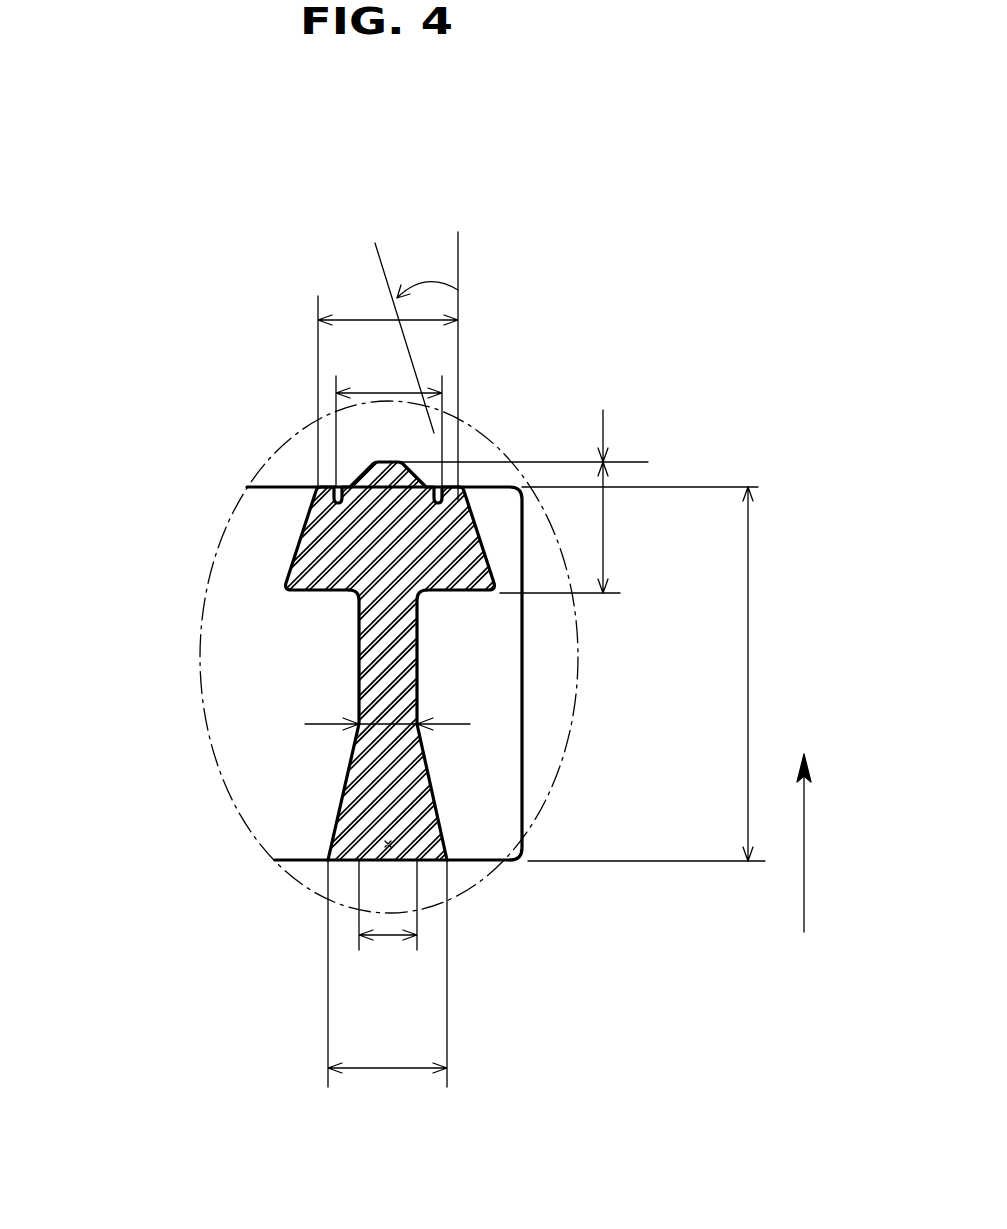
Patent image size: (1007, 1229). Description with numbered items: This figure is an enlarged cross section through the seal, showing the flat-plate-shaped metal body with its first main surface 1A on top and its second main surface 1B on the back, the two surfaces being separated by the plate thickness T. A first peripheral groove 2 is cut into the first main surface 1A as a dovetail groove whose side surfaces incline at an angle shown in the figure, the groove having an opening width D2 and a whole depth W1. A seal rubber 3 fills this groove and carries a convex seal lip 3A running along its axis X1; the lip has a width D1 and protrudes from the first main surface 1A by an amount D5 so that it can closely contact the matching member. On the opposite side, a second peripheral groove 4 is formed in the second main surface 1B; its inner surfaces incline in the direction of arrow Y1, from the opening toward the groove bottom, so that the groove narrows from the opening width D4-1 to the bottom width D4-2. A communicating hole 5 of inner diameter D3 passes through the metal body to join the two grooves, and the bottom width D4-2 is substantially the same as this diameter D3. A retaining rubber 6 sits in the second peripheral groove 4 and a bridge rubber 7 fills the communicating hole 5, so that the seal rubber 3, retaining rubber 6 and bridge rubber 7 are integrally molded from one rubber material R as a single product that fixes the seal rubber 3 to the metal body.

The first main surface 1A is at (275, 487).
The second main surface 1B is at (330, 860).
The first peripheral groove 2 is at (295, 555).
The seal rubber 3 is at (337, 527).
The convex seal lip 3A is at (405, 462).
The second peripheral groove 4 is at (335, 822).
The communicating hole 5 is at (418, 712).
The retaining rubber 6 is at (400, 780).
The bridge rubber 7 is at (403, 676).
The axis of the seal rubber X1 is at (390, 542).
The direction from groove opening side to groove bottom surface side Y1 is at (828, 843).
The rubber material R is at (290, 594).
The width of the seal lip D1 is at (389, 425).
The opening width of the first peripheral groove D2 is at (367, 320).
The inner diameter of the communicating hole D3 is at (385, 720).
The groove width of the opening of the second peripheral groove D4-1 is at (387, 981).
The groove width of the bottom of the second peripheral groove D4-2 is at (393, 929).
The amount of protrusion of the seal lip D5 is at (603, 475).
The whole depth of the first peripheral groove W1 is at (635, 527).
The thickness of the metal body T is at (766, 674).